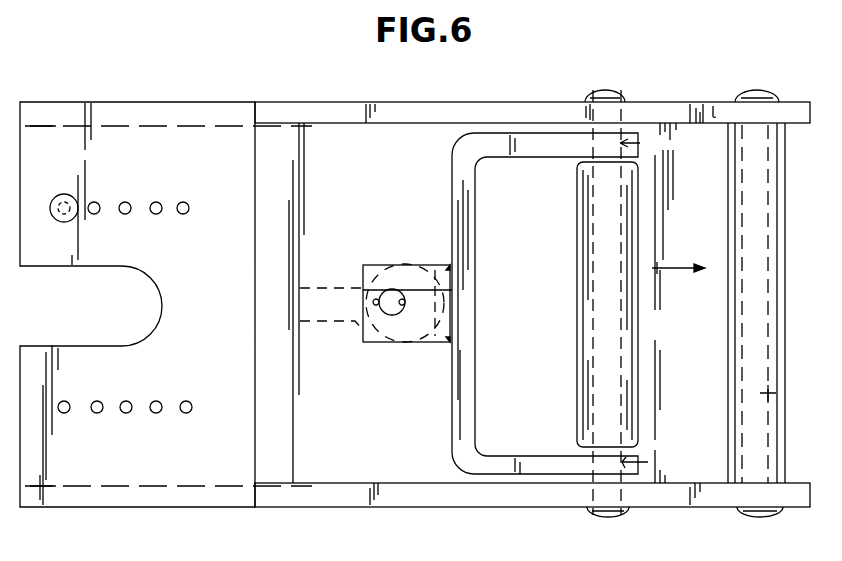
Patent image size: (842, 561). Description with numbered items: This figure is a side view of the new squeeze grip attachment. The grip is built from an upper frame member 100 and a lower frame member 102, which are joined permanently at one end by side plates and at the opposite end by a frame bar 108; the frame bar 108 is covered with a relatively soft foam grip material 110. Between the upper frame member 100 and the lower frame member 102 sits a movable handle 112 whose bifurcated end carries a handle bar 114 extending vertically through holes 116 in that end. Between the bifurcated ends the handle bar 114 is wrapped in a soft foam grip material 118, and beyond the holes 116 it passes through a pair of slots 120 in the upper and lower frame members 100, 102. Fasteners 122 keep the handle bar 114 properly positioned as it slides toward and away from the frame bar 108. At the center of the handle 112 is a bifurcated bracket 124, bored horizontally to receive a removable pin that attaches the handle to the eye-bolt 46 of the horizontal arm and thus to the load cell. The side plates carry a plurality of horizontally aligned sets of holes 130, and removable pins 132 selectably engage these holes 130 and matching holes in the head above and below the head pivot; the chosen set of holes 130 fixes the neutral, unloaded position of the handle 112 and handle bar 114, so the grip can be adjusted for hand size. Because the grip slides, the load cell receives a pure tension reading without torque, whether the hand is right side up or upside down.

The eye-bolt 46 is at (348, 294).
The upper frame member 100 is at (348, 110).
The lower frame member 102 is at (334, 498).
The frame bar 108 is at (773, 393).
The soft foam grip material 110 is at (784, 430).
The movable handle 112 is at (478, 340).
The handle bar 114 is at (611, 343).
The holes 116 is at (652, 302).
The soft foam grip material 118 is at (639, 365).
The slots 120 is at (714, 102).
The fasteners 122 is at (606, 92).
The bifurcated bracket 124 is at (364, 343).
The holes 130 is at (186, 202).
The removable pins 132 is at (71, 194).